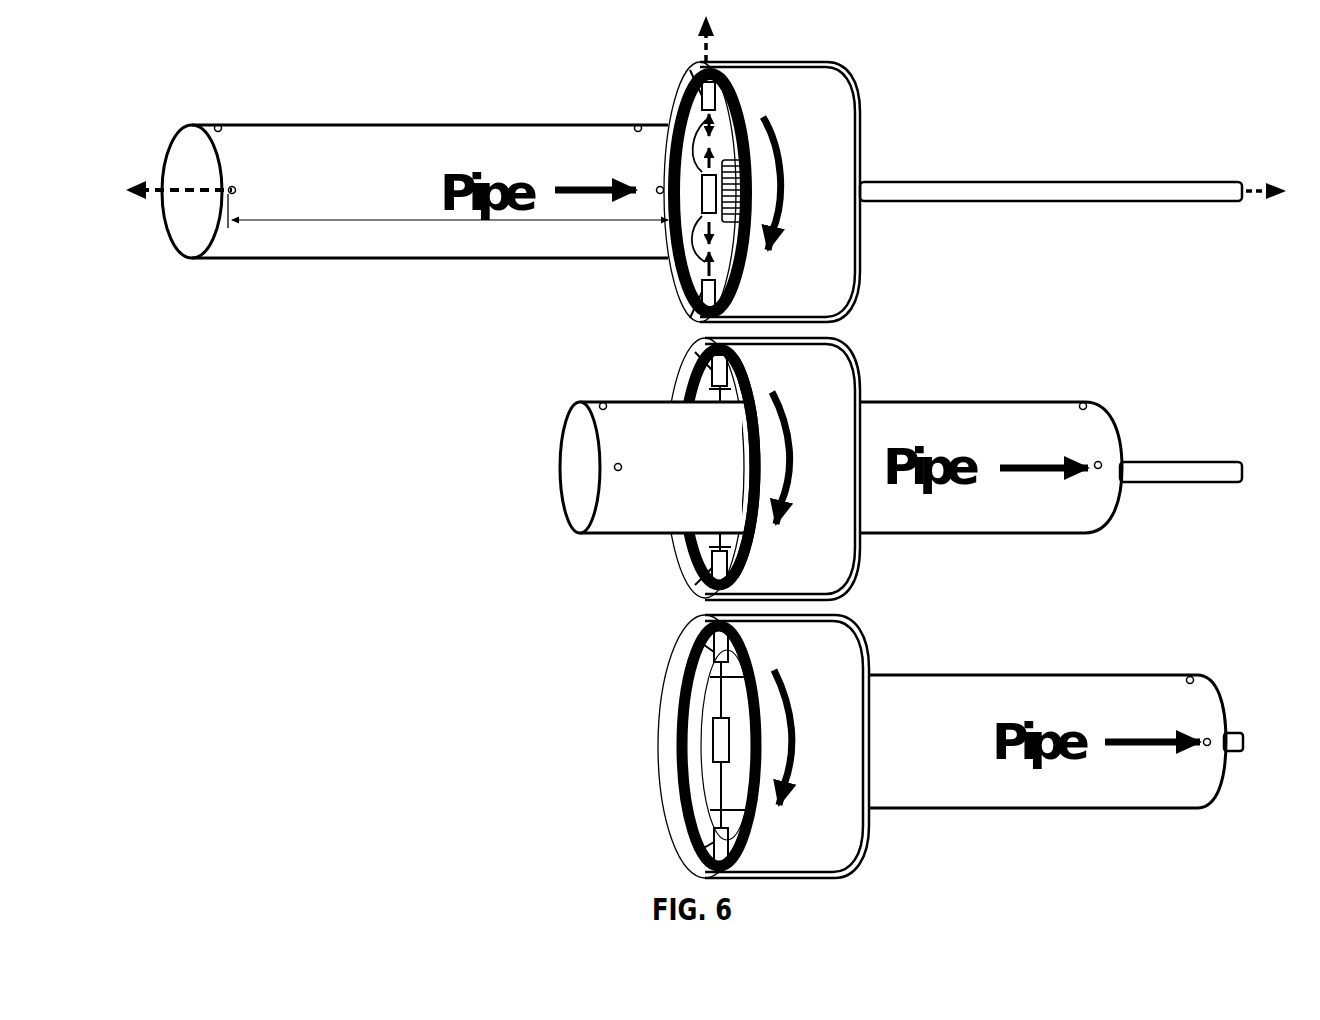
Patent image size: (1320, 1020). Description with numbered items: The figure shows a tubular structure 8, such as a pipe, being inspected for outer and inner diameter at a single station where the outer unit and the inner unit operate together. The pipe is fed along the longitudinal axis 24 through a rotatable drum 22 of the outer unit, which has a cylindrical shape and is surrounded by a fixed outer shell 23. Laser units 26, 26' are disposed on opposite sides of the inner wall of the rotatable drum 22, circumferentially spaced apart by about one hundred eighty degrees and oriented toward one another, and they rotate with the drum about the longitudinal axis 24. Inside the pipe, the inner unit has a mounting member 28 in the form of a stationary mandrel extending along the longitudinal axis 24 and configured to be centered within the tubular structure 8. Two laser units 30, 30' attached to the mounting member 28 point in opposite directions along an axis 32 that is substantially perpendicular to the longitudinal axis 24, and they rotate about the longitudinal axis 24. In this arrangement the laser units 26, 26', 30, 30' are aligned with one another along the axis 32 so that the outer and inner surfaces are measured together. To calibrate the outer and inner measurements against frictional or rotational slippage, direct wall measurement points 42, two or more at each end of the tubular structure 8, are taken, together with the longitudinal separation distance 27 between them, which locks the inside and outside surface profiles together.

The tubular structure 8 is at (213, 127).
The rotatable drum 22 is at (820, 270).
The fixed outer shell 23 is at (846, 90).
The longitudinal axis 24 is at (192, 200).
The laser unit 26 is at (670, 384).
The laser unit 26' is at (661, 577).
The longitudinal separation distance 27 is at (352, 223).
The mounting member 28 is at (1058, 201).
The laser unit 30 is at (671, 461).
The laser unit 30' is at (668, 522).
The axis 32 is at (708, 53).
The direct wall measurement points 42 is at (240, 186).